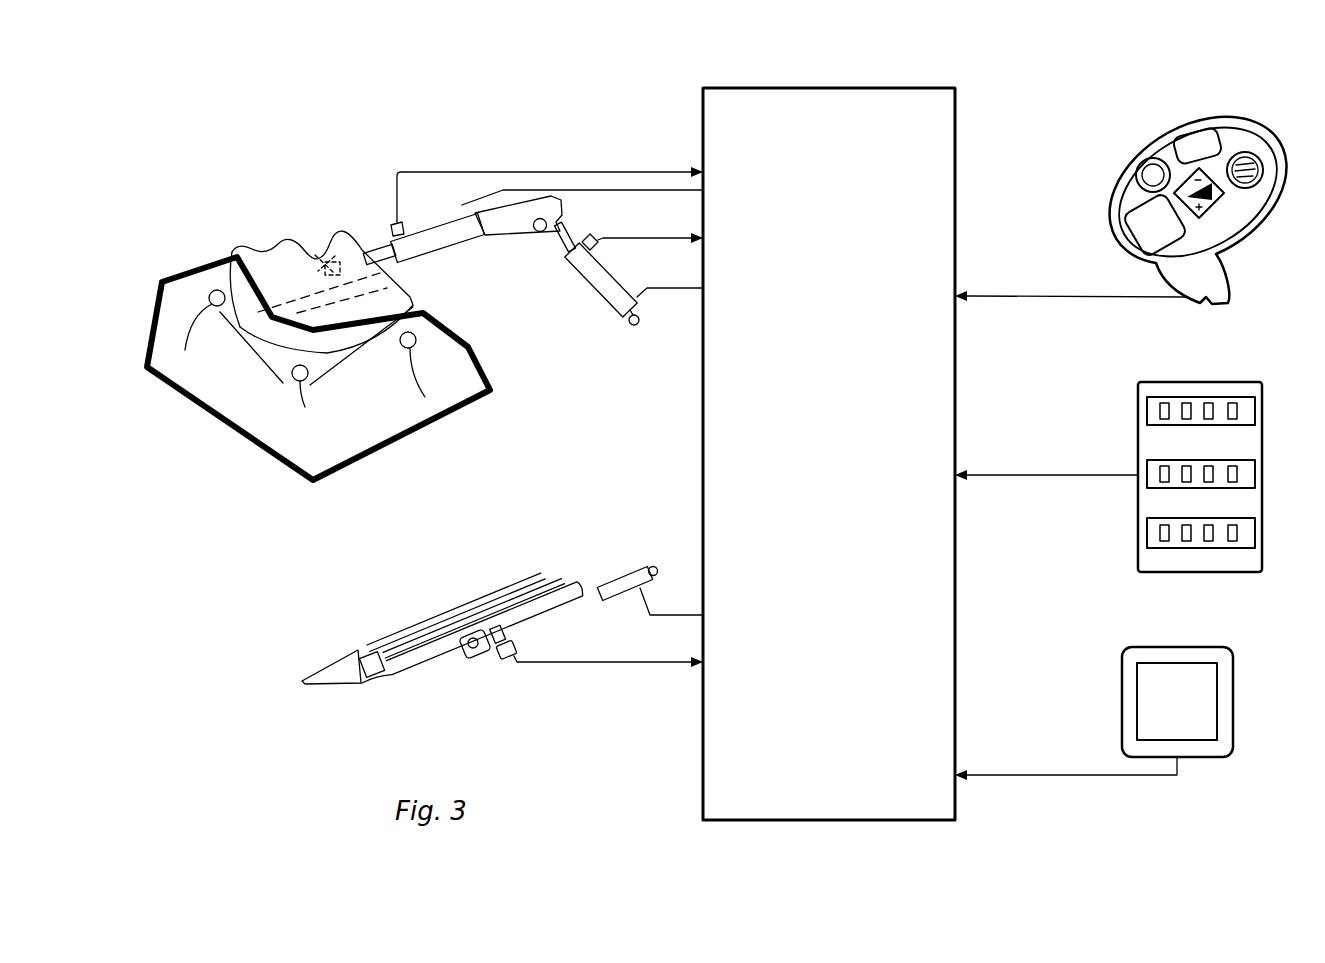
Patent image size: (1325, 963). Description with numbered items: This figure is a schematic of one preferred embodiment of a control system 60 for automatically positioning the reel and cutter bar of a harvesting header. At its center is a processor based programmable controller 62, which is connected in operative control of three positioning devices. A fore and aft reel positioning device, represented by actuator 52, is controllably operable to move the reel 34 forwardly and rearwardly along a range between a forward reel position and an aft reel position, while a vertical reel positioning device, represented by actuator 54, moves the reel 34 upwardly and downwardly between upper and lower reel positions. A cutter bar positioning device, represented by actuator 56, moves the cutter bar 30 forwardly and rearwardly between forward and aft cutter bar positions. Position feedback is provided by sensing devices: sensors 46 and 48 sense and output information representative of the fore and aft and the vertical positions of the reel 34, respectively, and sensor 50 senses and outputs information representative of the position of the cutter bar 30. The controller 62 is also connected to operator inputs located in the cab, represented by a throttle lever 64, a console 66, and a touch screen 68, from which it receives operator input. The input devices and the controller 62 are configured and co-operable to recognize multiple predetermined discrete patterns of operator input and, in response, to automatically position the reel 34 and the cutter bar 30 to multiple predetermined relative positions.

The cutter bar 30 is at (333, 685).
The reel 34 is at (258, 228).
The fore and aft reel position sensor 46 is at (597, 232).
The vertical reel position sensor 48 is at (392, 224).
The cutter bar position sensor 50 is at (501, 658).
The actuator 52 is at (440, 238).
The actuator 54 is at (598, 292).
The actuator 56 is at (620, 571).
The control system 60 is at (1028, 70).
The processor based programmable controller 62 is at (956, 147).
The throttle lever 64 is at (1110, 215).
The console 66 is at (1138, 417).
The touch screen 68 is at (1122, 698).